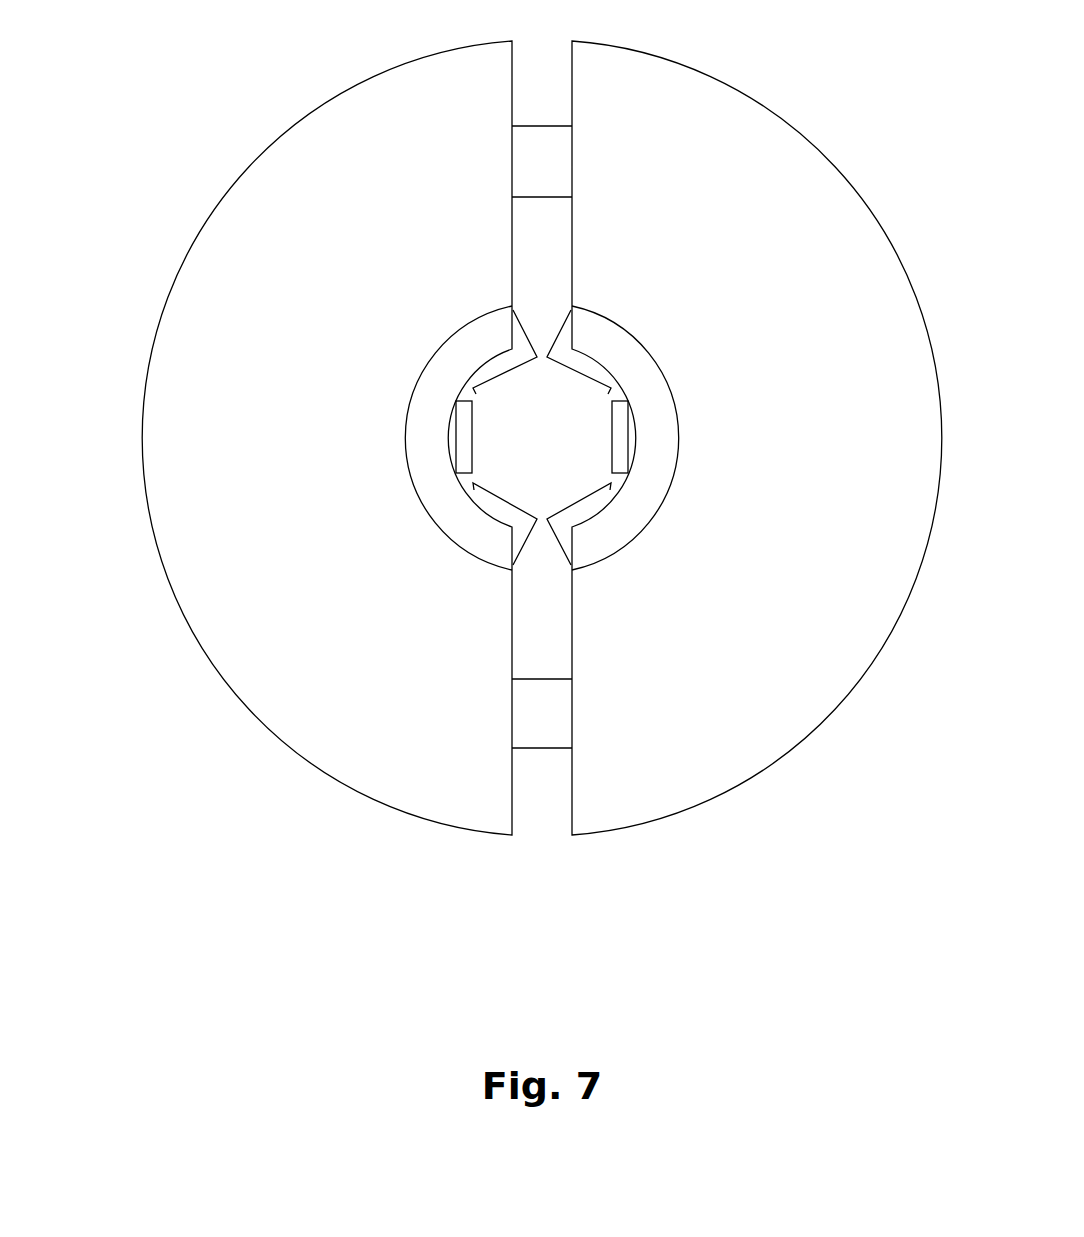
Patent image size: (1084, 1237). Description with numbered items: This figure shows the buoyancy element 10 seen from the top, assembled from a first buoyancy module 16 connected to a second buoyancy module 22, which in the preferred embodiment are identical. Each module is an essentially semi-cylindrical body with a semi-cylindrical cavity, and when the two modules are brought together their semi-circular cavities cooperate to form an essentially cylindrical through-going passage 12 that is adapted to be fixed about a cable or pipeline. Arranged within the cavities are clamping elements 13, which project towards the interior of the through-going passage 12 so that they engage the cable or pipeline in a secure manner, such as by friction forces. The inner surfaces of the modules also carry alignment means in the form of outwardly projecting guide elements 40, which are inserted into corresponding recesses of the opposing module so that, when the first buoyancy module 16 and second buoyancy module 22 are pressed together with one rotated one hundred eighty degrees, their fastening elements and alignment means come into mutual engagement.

The buoyancy element 10 is at (110, 452).
The through-going passage 12 is at (527, 425).
The clamping elements 13 is at (573, 367).
The first buoyancy module 16 is at (727, 140).
The second buoyancy module 22 is at (368, 142).
The guide elements 40 is at (527, 177).